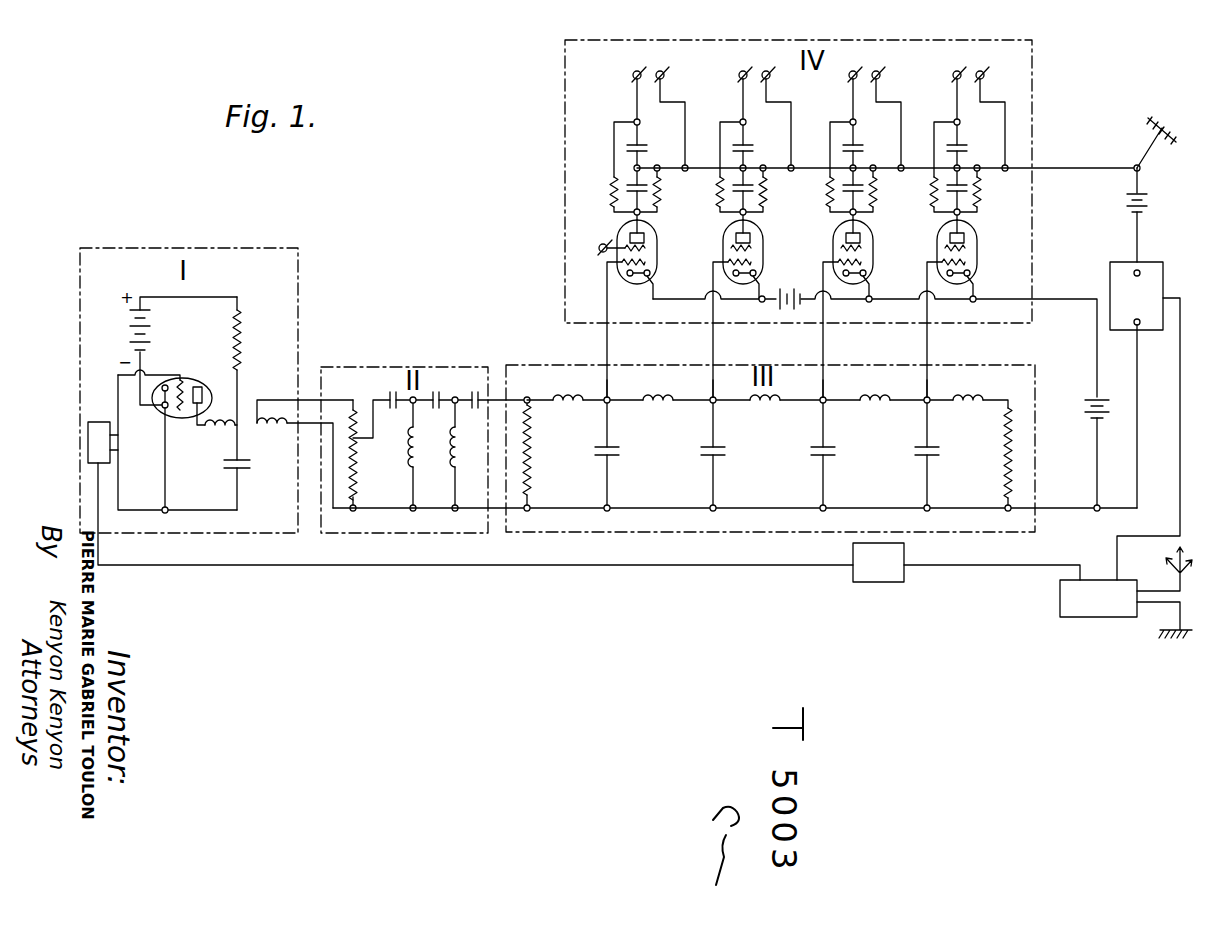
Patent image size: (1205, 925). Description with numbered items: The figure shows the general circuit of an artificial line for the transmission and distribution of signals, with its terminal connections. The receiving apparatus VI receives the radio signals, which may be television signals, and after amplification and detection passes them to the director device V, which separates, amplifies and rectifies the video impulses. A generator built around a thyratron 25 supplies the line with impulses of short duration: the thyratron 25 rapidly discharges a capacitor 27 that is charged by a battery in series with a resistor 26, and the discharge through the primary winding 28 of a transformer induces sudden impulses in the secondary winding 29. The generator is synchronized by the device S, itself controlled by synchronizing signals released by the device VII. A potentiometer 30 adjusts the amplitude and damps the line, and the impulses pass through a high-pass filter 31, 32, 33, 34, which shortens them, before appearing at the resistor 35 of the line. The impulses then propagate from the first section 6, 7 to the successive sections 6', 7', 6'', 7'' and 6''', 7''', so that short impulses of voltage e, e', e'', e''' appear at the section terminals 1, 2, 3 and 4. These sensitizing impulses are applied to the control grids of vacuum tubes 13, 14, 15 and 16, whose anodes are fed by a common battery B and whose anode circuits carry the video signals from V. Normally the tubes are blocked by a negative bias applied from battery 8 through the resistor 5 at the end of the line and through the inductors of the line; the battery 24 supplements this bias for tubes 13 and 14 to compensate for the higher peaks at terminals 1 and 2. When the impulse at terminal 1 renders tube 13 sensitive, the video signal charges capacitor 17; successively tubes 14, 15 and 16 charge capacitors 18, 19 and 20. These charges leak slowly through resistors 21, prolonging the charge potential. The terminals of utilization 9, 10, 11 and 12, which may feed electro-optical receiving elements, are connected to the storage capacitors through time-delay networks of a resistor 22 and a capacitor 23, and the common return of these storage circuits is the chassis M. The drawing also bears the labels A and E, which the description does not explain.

The section terminal 1 is at (611, 411).
The section terminal 2 is at (718, 411).
The section terminal 3 is at (828, 411).
The section terminal 4 is at (931, 411).
The resistor 5 is at (1015, 459).
The section capacitor 6 is at (616, 457).
The section capacitor 6' is at (726, 457).
The section capacitor 6'' is at (836, 457).
The section capacitor 6''' is at (943, 457).
The section inductor 7 is at (658, 411).
The section inductor 7' is at (765, 411).
The section inductor 7'' is at (875, 412).
The section inductor 7''' is at (968, 412).
The battery 8 is at (1095, 447).
The terminal of utilization 9 is at (650, 65).
The terminal of utilization 10 is at (756, 63).
The terminal of utilization 11 is at (866, 63).
The terminal of utilization 12 is at (970, 63).
The vacuum tube 13 is at (658, 252).
The vacuum tube 14 is at (764, 251).
The vacuum tube 15 is at (874, 251).
The vacuum tube 16 is at (978, 251).
The capacitor 17 is at (632, 179).
The capacitor 18 is at (739, 195).
The capacitor 19 is at (848, 196).
The capacitor 20 is at (953, 195).
The resistor 21 is at (828, 192).
The resistor 22 is at (762, 192).
The capacitor 23 is at (812, 147).
The battery 24 is at (788, 296).
The thyratron 25 is at (190, 379).
The resistor 26 is at (251, 378).
The capacitor 27 is at (246, 485).
The primary winding 28 is at (218, 438).
The secondary winding 29 is at (305, 454).
The potentiometer 30 is at (369, 455).
The high-pass filter element 31 is at (425, 454).
The high-pass filter element 32 is at (437, 390).
The high-pass filter element 33 is at (468, 454).
The high-pass filter element 34 is at (470, 390).
The resistor 35 is at (544, 454).
The anode supply connection A is at (1158, 139).
The common battery B is at (1146, 215).
The grid bias terminal E is at (622, 246).
The chassis M is at (1164, 630).
The synchronizing device S is at (103, 442).
The director device V is at (1136, 296).
The impulse voltage e is at (620, 382).
The impulse voltage e' is at (727, 382).
The impulse voltage e'' is at (839, 382).
The impulse voltage e''' is at (946, 382).
The receiving apparatus VI is at (1098, 598).
The synchronizing signal device VII is at (878, 562).